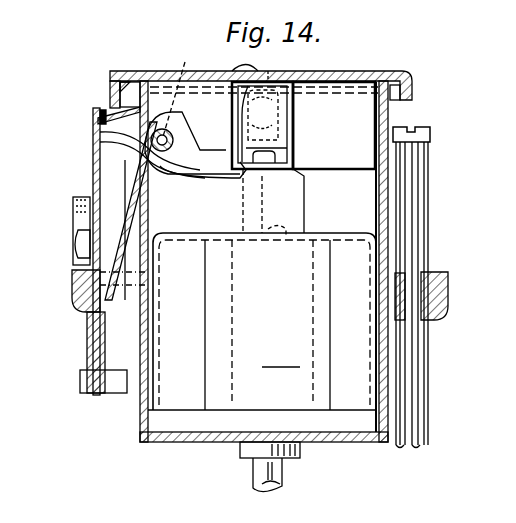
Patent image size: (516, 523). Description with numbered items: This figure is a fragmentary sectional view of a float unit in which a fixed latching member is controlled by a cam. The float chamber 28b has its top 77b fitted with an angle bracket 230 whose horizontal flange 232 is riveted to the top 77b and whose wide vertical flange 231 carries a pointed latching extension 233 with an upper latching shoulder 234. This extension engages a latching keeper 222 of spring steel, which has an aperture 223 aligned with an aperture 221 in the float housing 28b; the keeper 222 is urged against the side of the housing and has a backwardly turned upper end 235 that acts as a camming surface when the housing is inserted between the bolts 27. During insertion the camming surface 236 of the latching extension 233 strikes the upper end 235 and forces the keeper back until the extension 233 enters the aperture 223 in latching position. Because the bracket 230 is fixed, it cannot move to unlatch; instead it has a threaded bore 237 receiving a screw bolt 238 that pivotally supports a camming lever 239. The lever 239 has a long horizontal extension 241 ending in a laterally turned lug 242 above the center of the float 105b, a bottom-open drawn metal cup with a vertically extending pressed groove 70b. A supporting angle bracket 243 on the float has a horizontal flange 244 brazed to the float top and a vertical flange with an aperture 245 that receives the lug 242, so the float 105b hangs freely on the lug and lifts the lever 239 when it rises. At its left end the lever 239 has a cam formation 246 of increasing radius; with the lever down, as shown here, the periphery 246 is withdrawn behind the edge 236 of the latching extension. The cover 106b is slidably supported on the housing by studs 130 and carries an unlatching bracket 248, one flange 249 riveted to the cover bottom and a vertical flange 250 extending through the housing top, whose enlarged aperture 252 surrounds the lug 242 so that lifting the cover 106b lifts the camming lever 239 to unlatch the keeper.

The bolts 27 is at (412, 246).
The float chamber 28b is at (395, 127).
The pressed groove 70b is at (306, 398).
The top 77b is at (367, 71).
The float 105b is at (281, 359).
The cover 106b is at (336, 71).
The studs 130 is at (290, 74).
The aperture 221 is at (150, 170).
The latching keeper 222 is at (127, 205).
The aperture 223 is at (123, 160).
The angle bracket 230 is at (358, 125).
The vertical flange 231 is at (361, 169).
The horizontal flange 232 is at (412, 84).
The latching extension 233 is at (100, 142).
The upper latching shoulder 234 is at (100, 130).
The backwardly turned upper end 235 is at (120, 122).
The camming surface 236 is at (176, 179).
The threaded bore 237 is at (185, 92).
The screw bolt 238 is at (186, 132).
The camming lever 239 is at (202, 156).
The horizontal extension 241 is at (270, 172).
The lug 242 is at (300, 151).
The supporting angle bracket 243 is at (296, 219).
The horizontal flange 244 is at (280, 240).
The aperture 245 is at (254, 196).
The cam formation 246 is at (120, 114).
The unlatching bracket 248 is at (238, 86).
The flange 249 is at (270, 72).
The vertical flange 250 is at (366, 124).
The enlarged aperture 252 is at (286, 118).